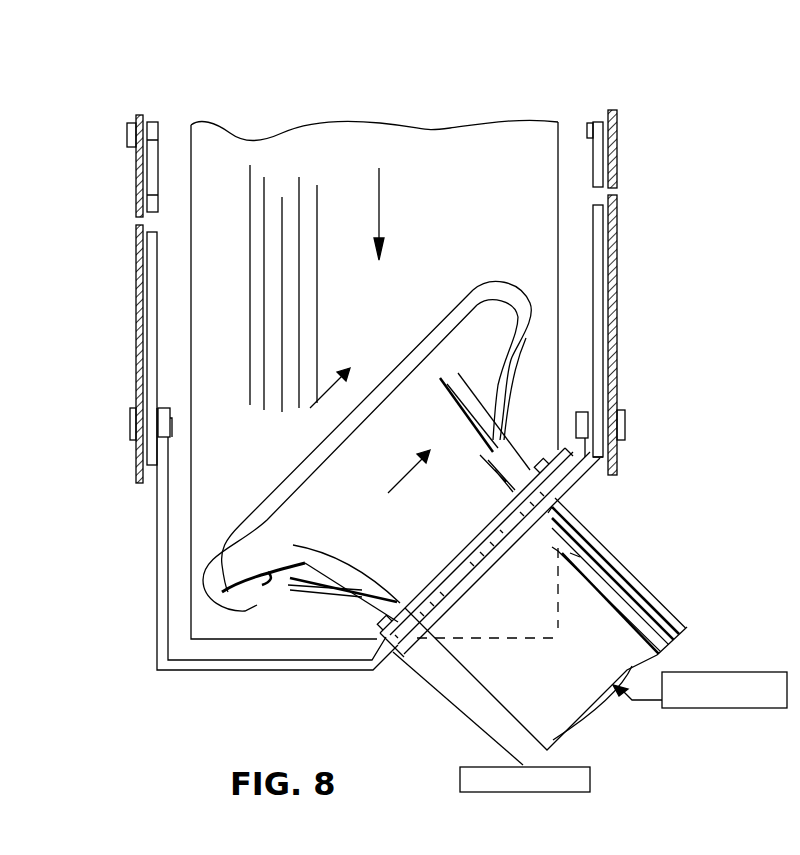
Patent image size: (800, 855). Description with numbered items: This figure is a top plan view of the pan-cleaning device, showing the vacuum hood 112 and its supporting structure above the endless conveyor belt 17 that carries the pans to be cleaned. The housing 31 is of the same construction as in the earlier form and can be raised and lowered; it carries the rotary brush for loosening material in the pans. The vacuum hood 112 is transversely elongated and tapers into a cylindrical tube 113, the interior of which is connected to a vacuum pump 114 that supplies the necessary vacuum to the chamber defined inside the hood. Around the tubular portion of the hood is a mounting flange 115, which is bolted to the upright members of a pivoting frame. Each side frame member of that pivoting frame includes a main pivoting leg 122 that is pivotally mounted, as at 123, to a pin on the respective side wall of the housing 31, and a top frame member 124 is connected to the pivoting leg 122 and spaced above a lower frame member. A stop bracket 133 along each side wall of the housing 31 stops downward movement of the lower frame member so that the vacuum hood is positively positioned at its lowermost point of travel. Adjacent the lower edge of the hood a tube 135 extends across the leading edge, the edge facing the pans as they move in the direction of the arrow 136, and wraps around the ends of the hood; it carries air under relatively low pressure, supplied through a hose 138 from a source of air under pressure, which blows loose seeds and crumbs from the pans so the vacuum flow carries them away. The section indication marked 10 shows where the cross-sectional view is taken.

The section line 10 is at (383, 414).
The endless conveyor belt 17 is at (447, 140).
The housing 31 is at (135, 240).
The vacuum hood 112 is at (342, 483).
The cylindrical tube 113 is at (480, 658).
The vacuum pump 114 is at (743, 670).
The mounting flange 115 is at (378, 637).
The main pivoting leg 122 is at (163, 127).
The pivot mounting 123 is at (590, 128).
The top frame member 124 is at (155, 278).
The stop bracket 133 is at (128, 430).
The tube 135 is at (415, 348).
The arrow 136 is at (380, 208).
The hose 138 is at (262, 582).